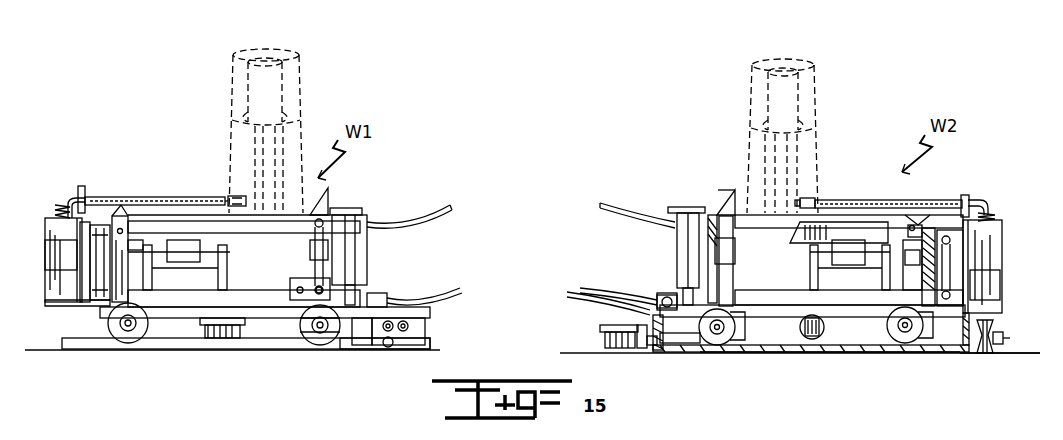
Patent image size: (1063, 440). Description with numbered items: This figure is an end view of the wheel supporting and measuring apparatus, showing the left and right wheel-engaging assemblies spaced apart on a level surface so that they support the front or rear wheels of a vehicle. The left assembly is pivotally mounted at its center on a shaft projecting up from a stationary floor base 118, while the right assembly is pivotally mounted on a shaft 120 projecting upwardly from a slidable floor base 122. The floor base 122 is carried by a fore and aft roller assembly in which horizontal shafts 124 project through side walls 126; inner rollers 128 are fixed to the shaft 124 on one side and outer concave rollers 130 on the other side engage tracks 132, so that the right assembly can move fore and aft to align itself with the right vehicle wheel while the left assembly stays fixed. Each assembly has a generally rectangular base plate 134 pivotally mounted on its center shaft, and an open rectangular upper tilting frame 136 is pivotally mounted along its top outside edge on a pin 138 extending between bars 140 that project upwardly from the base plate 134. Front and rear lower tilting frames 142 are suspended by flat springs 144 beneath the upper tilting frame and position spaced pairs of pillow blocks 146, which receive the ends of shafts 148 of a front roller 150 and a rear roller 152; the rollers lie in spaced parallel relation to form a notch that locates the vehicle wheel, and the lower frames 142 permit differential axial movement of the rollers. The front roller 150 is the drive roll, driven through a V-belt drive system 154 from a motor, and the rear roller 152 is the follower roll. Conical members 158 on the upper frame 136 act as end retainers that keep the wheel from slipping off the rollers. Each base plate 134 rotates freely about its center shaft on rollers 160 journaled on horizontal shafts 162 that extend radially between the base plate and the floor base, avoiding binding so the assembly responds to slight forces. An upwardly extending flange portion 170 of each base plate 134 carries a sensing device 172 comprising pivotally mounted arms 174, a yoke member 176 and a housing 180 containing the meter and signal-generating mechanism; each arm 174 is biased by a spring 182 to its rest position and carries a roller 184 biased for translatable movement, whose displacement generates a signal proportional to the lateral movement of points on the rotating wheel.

The stationary floor base 118 is at (205, 340).
The shaft 120 is at (814, 342).
The slidable floor base 122 is at (770, 348).
The horizontal shafts 124 is at (655, 348).
The side walls 126 is at (660, 323).
The inner rollers 128 is at (630, 349).
The outer concave rollers 130 is at (993, 332).
The tracks 132 is at (982, 356).
The base plate 134 is at (256, 306).
The upper tilting frame 136 is at (152, 210).
The pin 138 is at (123, 231).
The bars 140 is at (118, 296).
The lower tilting frames 142 is at (195, 285).
The flat springs 144 is at (340, 258).
The pillow blocks 146 is at (330, 246).
The shafts 148 is at (92, 265).
The front roller 150 is at (280, 264).
The rear roller 152 is at (780, 254).
The V-belt drive system 154 is at (96, 300).
The conical members 158 is at (118, 212).
The rollers 160 is at (145, 338).
The horizontal shafts 162 is at (128, 326).
The flange portion 170 is at (84, 280).
The sensing device 172 is at (38, 236).
The pivotally mounted arms 174 is at (70, 196).
The yoke member 176 is at (81, 186).
The housing 180 is at (45, 252).
The spring 182 is at (55, 208).
The roller 184 is at (238, 198).